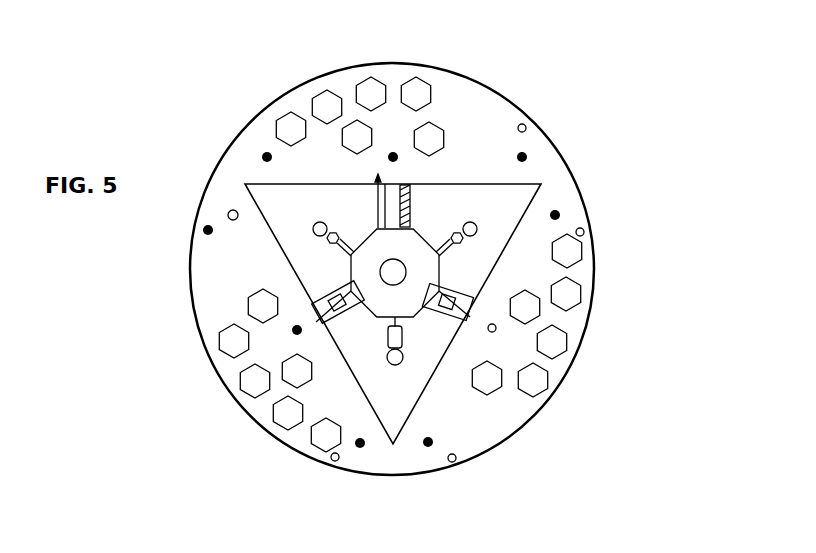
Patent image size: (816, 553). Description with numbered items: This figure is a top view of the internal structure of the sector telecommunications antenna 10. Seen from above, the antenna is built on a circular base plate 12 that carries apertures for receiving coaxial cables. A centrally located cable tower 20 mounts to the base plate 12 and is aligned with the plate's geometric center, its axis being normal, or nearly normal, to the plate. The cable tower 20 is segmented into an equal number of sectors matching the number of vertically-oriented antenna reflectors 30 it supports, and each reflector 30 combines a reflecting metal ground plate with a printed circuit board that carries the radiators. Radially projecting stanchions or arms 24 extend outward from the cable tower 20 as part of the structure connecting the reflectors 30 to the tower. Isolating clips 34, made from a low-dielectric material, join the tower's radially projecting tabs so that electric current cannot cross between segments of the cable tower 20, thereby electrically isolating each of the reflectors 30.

The telecommunications antenna 10 is at (560, 123).
The circular base plate 12 is at (256, 402).
The cable tower 20 is at (390, 246).
The radially projecting stanchions or arms 24 is at (478, 312).
The antenna reflector 30 is at (300, 186).
The isolating clip 34 is at (440, 245).